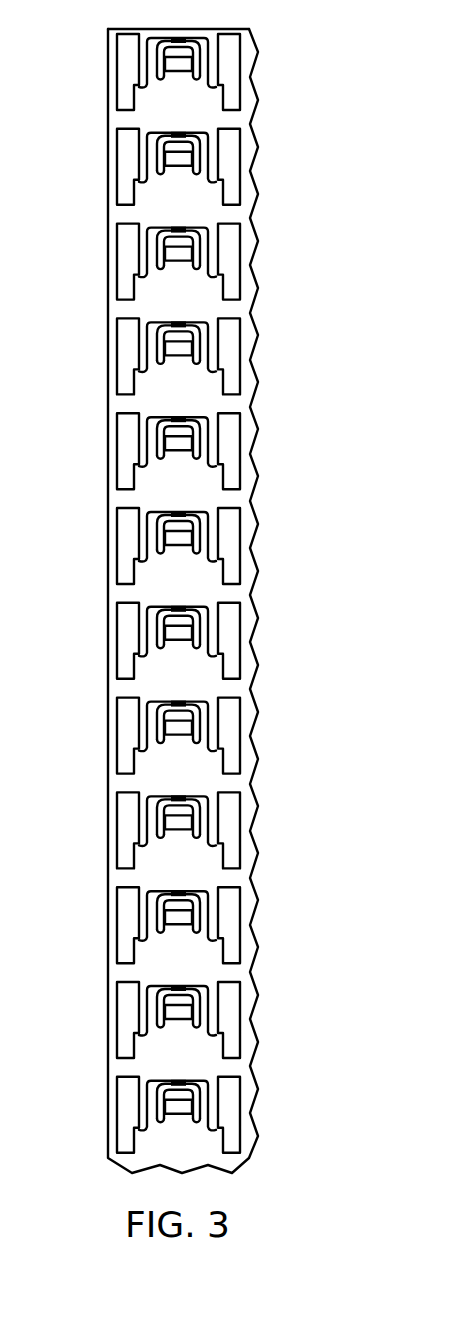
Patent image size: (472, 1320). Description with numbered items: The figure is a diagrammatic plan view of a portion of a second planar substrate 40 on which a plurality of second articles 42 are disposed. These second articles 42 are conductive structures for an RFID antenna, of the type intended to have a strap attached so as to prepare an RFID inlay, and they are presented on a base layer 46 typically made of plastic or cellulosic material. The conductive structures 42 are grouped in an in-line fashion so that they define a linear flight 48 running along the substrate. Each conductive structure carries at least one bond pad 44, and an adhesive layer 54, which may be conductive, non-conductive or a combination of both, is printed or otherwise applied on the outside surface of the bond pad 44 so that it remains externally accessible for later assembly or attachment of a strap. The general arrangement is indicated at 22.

The RFID inlay web 22 is at (322, 100).
The second planar substrate 40 is at (108, 165).
The second article 42 is at (99, 641).
The bond pad 44 is at (178, 185).
The base layer 46 is at (108, 828).
The linear flight 48 is at (130, 29).
The adhesive layer 54 is at (180, 752).